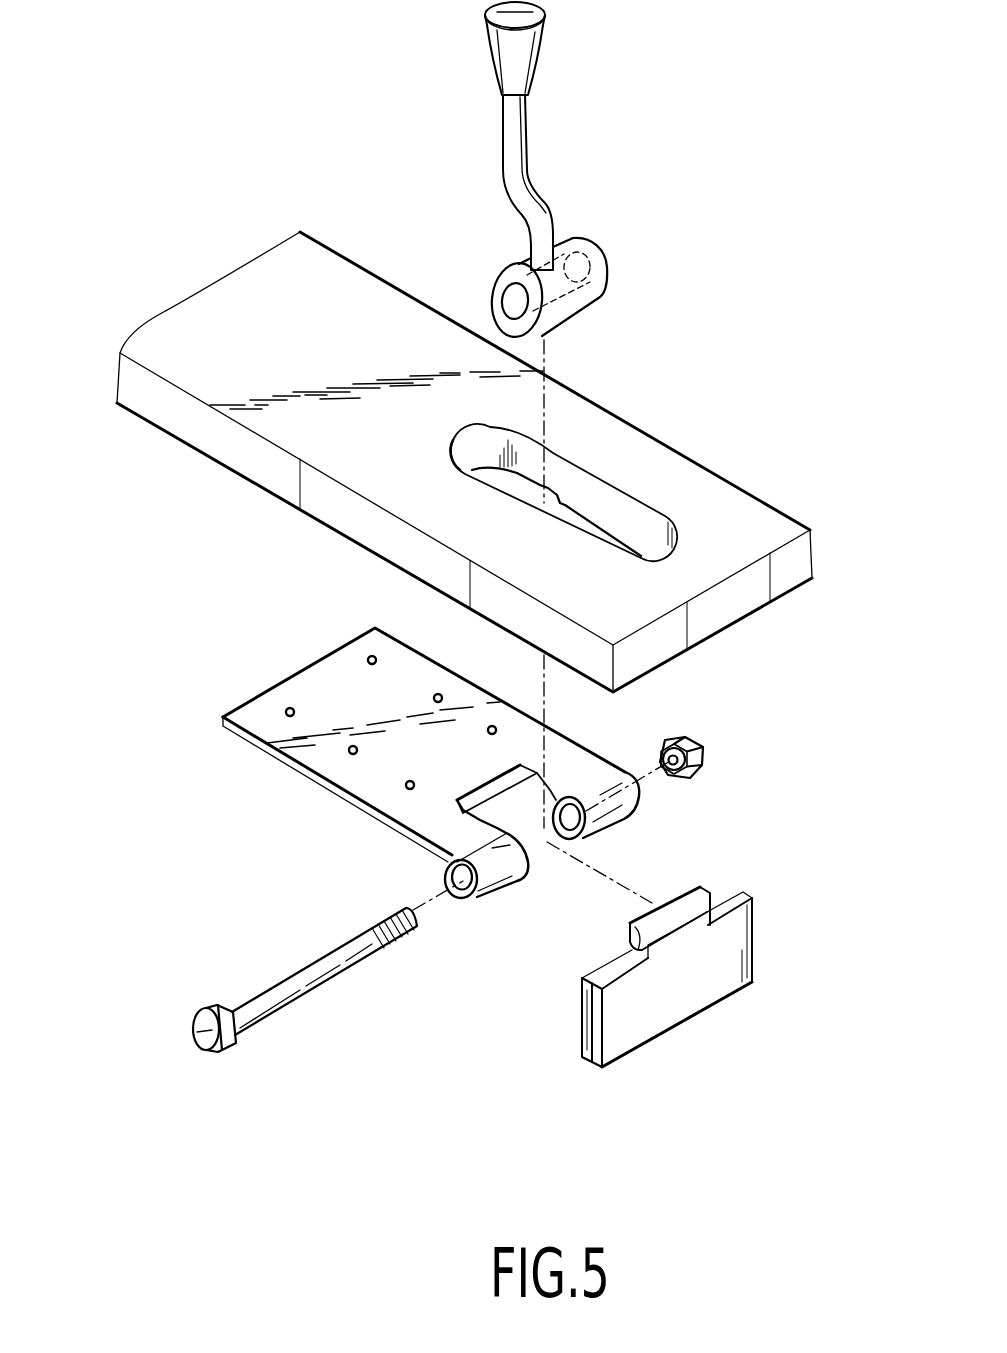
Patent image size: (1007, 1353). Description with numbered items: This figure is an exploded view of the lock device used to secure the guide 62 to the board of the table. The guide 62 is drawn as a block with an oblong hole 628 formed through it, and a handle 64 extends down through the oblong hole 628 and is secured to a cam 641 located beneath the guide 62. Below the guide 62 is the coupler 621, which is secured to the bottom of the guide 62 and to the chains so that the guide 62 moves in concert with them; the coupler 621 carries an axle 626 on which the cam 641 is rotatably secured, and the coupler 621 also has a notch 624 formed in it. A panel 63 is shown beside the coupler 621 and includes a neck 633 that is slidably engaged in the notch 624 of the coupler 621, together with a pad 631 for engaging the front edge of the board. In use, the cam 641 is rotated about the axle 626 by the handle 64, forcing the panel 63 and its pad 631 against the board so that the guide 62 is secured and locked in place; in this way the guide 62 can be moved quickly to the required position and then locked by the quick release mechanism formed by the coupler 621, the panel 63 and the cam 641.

The guide 62 is at (390, 306).
The oblong hole 628 is at (618, 517).
The handle 64 is at (515, 163).
The cam 641 is at (597, 290).
The coupler 621 is at (268, 725).
The notch 624 is at (487, 811).
The axle 626 is at (286, 994).
The panel 63 is at (753, 945).
The pad 631 is at (582, 1023).
The neck 633 is at (687, 906).